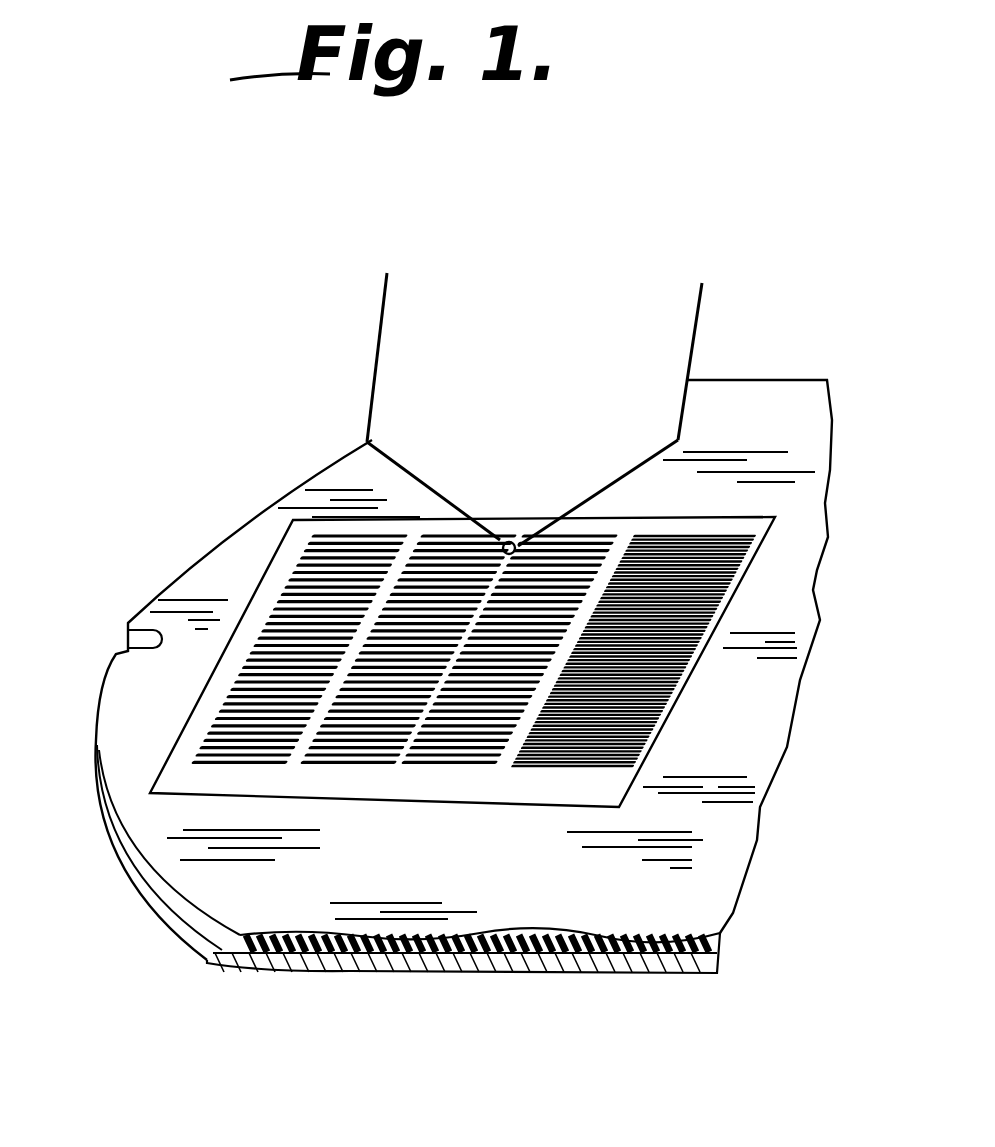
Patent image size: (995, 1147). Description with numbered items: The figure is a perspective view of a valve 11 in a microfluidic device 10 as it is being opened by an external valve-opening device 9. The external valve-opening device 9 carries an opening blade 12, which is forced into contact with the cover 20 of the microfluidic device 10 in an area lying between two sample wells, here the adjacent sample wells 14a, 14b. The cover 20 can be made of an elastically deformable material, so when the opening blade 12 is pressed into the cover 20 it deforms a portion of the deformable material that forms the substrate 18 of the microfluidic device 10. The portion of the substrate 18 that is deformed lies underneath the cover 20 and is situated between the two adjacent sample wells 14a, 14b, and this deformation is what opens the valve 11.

The external valve-opening device 9 is at (365, 331).
The microfluidic device 10 is at (200, 505).
The valve 11 is at (498, 553).
The opening blade 12 is at (655, 421).
The sample well 14a is at (607, 540).
The sample well 14b is at (443, 537).
The substrate 18 is at (228, 886).
The cover 20 is at (190, 730).